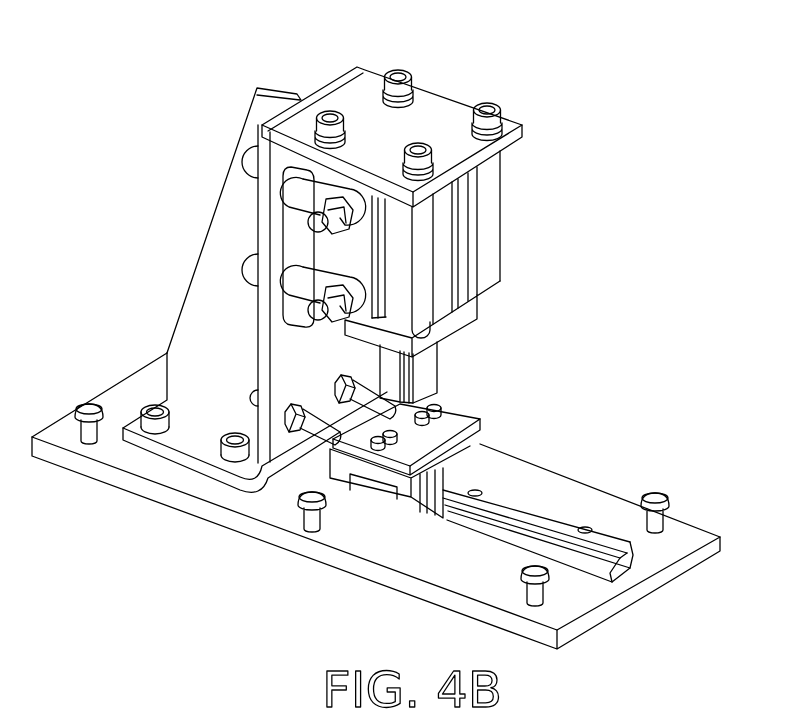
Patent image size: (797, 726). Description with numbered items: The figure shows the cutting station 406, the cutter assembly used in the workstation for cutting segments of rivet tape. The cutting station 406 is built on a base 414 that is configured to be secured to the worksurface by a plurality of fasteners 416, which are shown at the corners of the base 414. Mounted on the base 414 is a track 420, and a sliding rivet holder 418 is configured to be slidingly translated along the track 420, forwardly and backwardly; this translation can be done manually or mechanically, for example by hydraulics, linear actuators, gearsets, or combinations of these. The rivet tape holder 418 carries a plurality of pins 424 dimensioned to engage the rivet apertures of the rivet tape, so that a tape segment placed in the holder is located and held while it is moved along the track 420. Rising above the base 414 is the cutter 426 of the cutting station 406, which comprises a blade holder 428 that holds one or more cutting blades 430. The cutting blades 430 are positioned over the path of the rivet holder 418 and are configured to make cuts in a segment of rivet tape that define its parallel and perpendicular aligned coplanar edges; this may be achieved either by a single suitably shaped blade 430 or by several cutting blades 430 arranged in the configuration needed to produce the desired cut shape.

The cutting station 406 is at (462, 72).
The base 414 is at (708, 535).
The fasteners 416 is at (667, 492).
The sliding rivet holder 418 is at (515, 431).
The track 420 is at (622, 570).
The pins 424 is at (443, 396).
The cutter 426 is at (530, 178).
The blade holder 428 is at (472, 296).
The cutting blades 430 is at (430, 379).